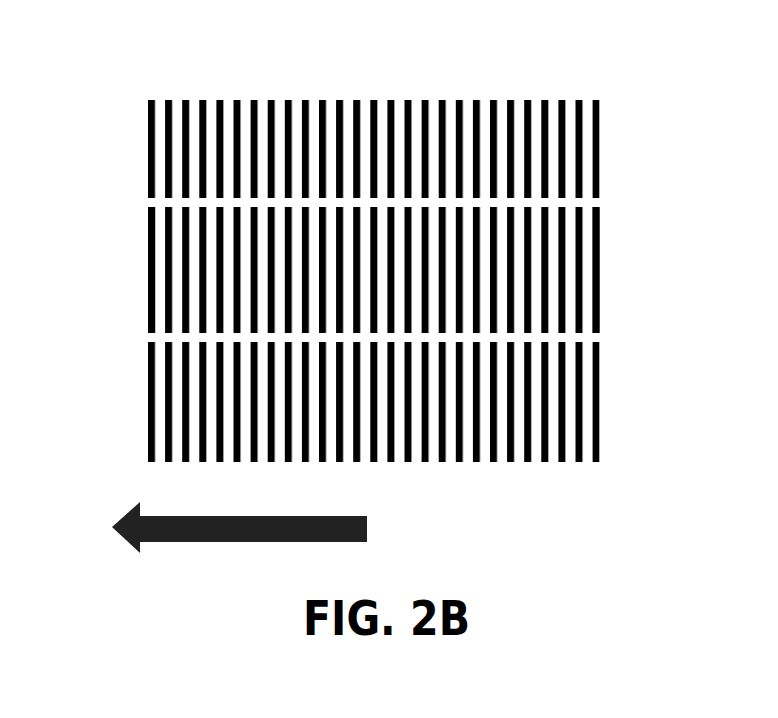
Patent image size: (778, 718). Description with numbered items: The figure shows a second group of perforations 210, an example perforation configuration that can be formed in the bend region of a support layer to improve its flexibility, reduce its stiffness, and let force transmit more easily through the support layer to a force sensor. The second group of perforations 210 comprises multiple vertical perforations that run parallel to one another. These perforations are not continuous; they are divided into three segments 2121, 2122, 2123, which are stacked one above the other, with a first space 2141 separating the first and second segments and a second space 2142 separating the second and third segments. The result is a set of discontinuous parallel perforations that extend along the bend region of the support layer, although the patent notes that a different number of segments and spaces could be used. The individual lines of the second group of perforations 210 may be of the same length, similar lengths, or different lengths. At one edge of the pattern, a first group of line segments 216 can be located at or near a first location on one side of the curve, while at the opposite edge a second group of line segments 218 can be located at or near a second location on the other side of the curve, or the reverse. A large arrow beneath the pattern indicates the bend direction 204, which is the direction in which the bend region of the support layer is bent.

The second group of perforations 210 is at (154, 36).
The segment 2121 is at (99, 147).
The segment 2122 is at (355, 270).
The segment 2123 is at (99, 404).
The space 2141 is at (623, 205).
The space 2142 is at (623, 337).
The first group of line segments 216 is at (150, 272).
The second group of line segments 218 is at (597, 280).
The bend direction 204 is at (354, 539).